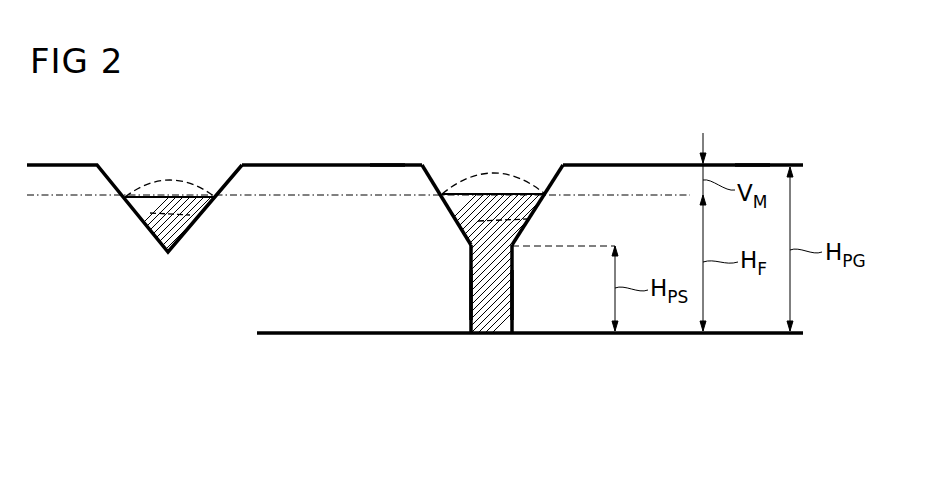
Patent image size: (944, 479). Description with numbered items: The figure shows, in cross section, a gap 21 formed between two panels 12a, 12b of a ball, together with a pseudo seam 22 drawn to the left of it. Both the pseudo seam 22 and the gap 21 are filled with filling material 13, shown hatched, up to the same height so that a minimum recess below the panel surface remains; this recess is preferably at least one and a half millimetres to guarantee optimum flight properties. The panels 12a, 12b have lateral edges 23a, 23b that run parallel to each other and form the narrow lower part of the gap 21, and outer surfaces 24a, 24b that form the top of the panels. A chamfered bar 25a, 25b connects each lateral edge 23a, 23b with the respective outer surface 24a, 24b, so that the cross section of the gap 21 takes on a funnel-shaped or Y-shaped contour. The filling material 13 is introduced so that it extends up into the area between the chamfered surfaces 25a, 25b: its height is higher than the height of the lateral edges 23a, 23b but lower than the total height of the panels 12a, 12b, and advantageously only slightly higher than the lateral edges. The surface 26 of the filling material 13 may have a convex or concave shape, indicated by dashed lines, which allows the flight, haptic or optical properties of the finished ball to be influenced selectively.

The panel 12a is at (325, 238).
The panel 12b is at (645, 235).
The filling material 13 is at (196, 221).
The gap 21 is at (469, 262).
The pseudo seam 22 is at (142, 225).
The lateral edge of the panel 23a is at (470, 291).
The lateral edge of the panel 23b is at (512, 291).
The outer surface of the panel 24a is at (388, 163).
The outer surface of the panel 24b is at (753, 163).
The chamfered bar 25a is at (436, 178).
The chamfered bar 25b is at (541, 180).
The surface of the filling material 26 is at (167, 195).